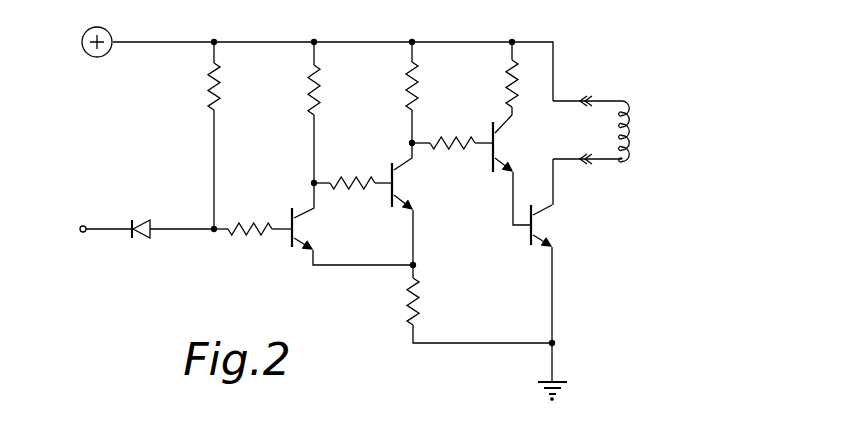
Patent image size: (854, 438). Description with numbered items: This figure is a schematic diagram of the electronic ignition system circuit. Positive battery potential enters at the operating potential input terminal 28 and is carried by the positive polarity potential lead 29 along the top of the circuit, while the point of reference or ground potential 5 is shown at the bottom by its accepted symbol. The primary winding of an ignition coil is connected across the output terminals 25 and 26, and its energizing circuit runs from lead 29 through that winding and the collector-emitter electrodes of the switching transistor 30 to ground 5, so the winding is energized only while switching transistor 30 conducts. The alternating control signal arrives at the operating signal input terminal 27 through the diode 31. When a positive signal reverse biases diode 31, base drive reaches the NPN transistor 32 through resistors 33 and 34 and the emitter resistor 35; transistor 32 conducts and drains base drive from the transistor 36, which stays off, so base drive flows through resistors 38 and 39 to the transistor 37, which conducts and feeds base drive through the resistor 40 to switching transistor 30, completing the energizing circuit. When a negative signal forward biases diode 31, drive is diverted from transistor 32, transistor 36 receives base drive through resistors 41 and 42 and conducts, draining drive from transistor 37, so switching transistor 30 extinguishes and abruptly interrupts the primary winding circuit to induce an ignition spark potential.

The point of reference or ground potential 5 is at (542, 384).
The output terminal 25 is at (580, 98).
The output terminal 26 is at (580, 162).
The operating signal input terminal 27 is at (83, 233).
The operating potential input terminal 28 is at (105, 58).
The positive polarity potential lead 29 is at (246, 42).
The switching transistor 30 is at (540, 215).
The diode 31 is at (138, 218).
The NPN transistor 32 is at (305, 225).
The resistor 33 is at (207, 86).
The resistor 34 is at (248, 238).
The emitter resistor 35 is at (424, 286).
The NPN transistor 36 is at (403, 188).
The NPN transistor 37 is at (500, 129).
The resistor 38 is at (420, 76).
The resistor 39 is at (455, 136).
The resistor 40 is at (527, 78).
The resistor 41 is at (321, 83).
The resistor 42 is at (343, 178).